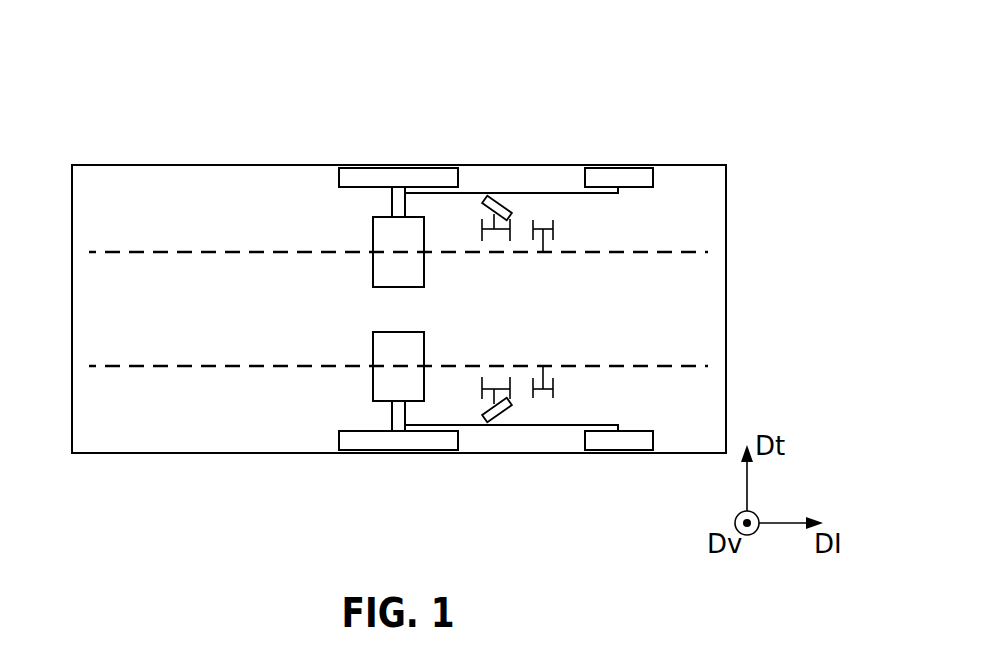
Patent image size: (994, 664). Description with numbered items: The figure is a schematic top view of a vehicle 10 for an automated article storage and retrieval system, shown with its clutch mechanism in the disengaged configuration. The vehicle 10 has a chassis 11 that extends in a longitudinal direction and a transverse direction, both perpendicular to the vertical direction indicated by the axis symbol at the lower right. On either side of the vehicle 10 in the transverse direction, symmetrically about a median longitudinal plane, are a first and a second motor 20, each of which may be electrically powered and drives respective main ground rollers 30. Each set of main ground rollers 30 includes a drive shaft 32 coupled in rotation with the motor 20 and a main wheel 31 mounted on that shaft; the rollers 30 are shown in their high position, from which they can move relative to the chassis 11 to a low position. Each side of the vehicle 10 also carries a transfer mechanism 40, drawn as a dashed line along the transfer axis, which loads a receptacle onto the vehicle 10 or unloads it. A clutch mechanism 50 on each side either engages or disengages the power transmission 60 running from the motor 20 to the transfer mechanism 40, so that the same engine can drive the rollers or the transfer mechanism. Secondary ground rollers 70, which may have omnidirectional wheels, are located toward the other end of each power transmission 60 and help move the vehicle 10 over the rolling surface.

The vehicle 10 is at (84, 82).
The chassis 11 is at (175, 165).
The motor 20 is at (388, 243).
The main ground rollers 30 is at (392, 309).
The main wheel 31 is at (366, 178).
The drive shaft 32 is at (398, 195).
The transfer mechanism 40 is at (663, 252).
The clutch mechanism 50 is at (499, 208).
The power transmission 60 is at (562, 193).
The secondary ground rollers 70 is at (620, 178).